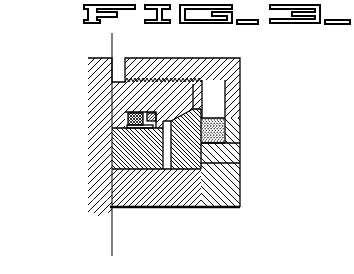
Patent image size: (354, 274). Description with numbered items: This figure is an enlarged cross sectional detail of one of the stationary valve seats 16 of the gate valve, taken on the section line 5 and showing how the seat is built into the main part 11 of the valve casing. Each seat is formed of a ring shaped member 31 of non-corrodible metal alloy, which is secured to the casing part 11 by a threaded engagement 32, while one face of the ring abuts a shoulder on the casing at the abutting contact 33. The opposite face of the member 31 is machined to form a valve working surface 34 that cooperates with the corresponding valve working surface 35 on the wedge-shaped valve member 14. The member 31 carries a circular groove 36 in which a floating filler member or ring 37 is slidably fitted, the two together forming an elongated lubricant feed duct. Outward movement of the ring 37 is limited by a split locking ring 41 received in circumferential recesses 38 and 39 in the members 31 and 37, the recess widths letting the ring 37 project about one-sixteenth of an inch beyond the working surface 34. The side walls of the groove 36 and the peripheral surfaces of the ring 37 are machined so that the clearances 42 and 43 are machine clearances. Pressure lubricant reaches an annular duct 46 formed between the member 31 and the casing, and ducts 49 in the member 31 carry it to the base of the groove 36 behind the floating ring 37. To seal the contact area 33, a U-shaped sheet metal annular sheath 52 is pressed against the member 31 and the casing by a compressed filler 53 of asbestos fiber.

The section line 5- 5 is at (130, 33).
The main part of the valve casing 11 is at (226, 187).
The valve member 14 is at (93, 72).
The stationary valve seats 16 is at (197, 208).
The ring shaped member 31 is at (144, 196).
The threaded engagement 32 is at (147, 79).
The abutting contact with a shoulder 33 is at (201, 163).
The valve working surface 34 is at (107, 197).
The valve working surface 35 is at (107, 219).
The groove 36 is at (167, 170).
The filler member or ring 37 is at (130, 133).
The circumferential recess 38 is at (127, 126).
The circumferential recess 39 is at (118, 148).
The split locking ring 41 is at (142, 112).
The clearance 42 is at (125, 118).
The clearance 43 is at (107, 177).
The annular duct 46 is at (221, 89).
The duct 49 is at (190, 100).
The annular sheath 52 is at (226, 140).
The compressed filler 53 is at (226, 126).